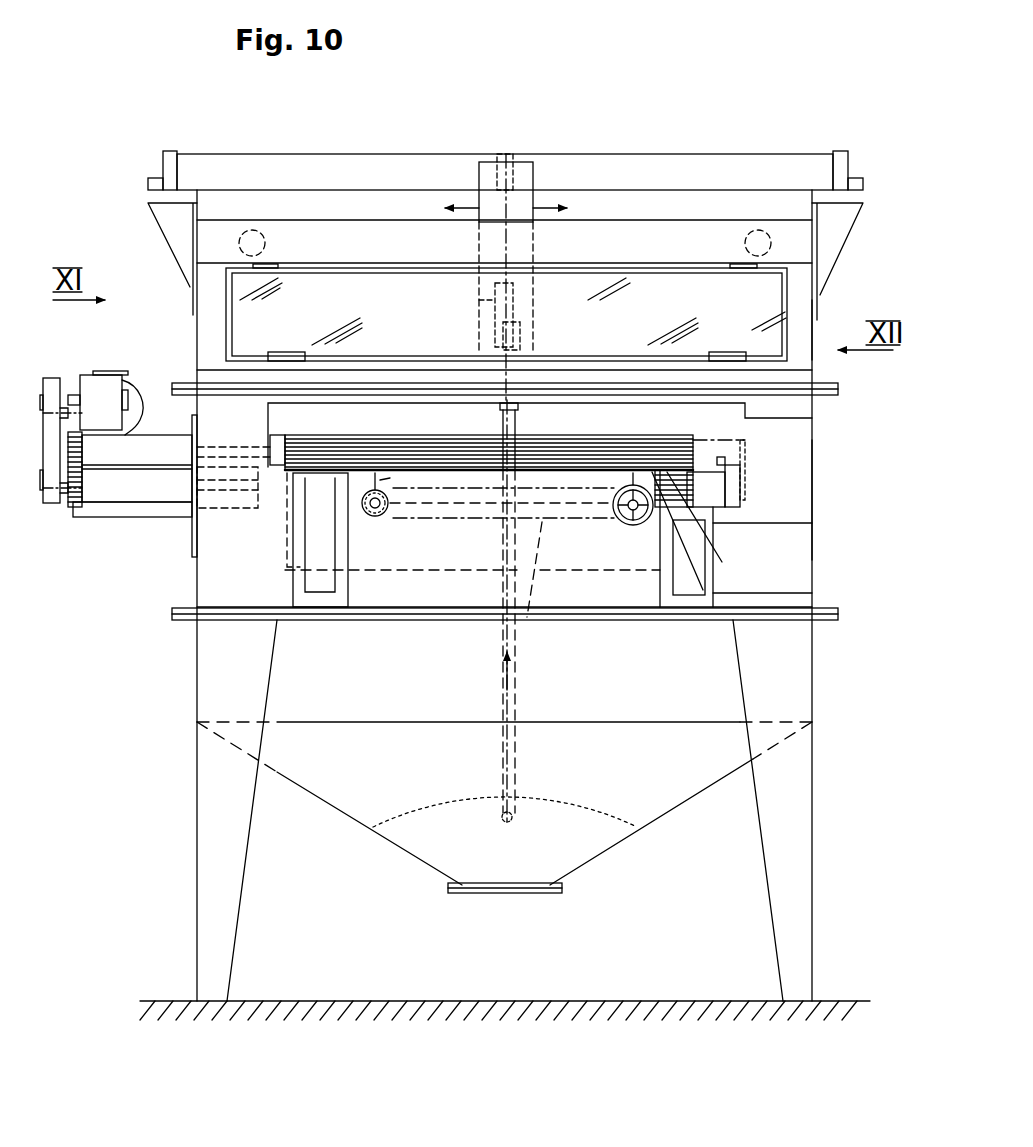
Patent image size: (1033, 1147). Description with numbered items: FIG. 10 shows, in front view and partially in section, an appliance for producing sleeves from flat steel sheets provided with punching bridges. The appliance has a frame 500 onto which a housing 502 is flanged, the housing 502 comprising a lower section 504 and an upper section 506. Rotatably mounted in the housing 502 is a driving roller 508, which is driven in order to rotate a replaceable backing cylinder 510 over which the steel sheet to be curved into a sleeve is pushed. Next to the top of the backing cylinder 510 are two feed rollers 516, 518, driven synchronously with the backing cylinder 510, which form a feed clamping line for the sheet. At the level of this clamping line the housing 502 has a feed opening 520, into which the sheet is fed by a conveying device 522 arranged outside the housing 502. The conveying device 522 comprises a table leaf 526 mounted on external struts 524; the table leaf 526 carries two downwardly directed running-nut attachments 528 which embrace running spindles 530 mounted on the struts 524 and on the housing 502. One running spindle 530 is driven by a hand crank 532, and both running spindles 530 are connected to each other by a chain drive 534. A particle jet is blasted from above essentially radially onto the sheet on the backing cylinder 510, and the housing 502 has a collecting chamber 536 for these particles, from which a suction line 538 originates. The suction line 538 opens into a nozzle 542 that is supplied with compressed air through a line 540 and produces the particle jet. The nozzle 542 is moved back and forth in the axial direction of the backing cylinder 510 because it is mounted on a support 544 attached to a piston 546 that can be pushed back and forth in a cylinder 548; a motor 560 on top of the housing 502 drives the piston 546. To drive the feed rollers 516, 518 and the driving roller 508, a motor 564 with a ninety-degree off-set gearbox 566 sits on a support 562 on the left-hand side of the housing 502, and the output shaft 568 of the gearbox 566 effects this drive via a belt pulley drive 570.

The frame 500 is at (195, 730).
The housing 502 is at (197, 577).
The lower section 504 is at (812, 505).
The upper section 506 is at (803, 340).
The driving roller 508 is at (712, 497).
The backing cylinder 510 is at (420, 572).
The feed roller 516 is at (660, 440).
The feed roller 518 is at (722, 562).
The feed opening 520 is at (362, 405).
The conveying device 522 is at (572, 527).
The external struts 524 is at (320, 488).
The table leaf 526 is at (432, 470).
The running-nut attachments 528 is at (385, 480).
The running spindles 530 is at (375, 517).
The hand crank 532 is at (640, 527).
The chain drive 534 is at (527, 620).
The collecting chamber 536 is at (645, 810).
The suction line 538 is at (500, 690).
The line 540 is at (505, 300).
The nozzle 542 is at (513, 340).
The support 544 is at (513, 205).
The piston 546 is at (494, 178).
The cylinder 548 is at (505, 133).
The motor 560 is at (327, 157).
The support 562 is at (122, 510).
The motor 564 is at (140, 407).
The 90° off-set gearbox 566 is at (100, 390).
The output shaft 568 is at (63, 378).
The belt pulley drive 570 is at (58, 505).